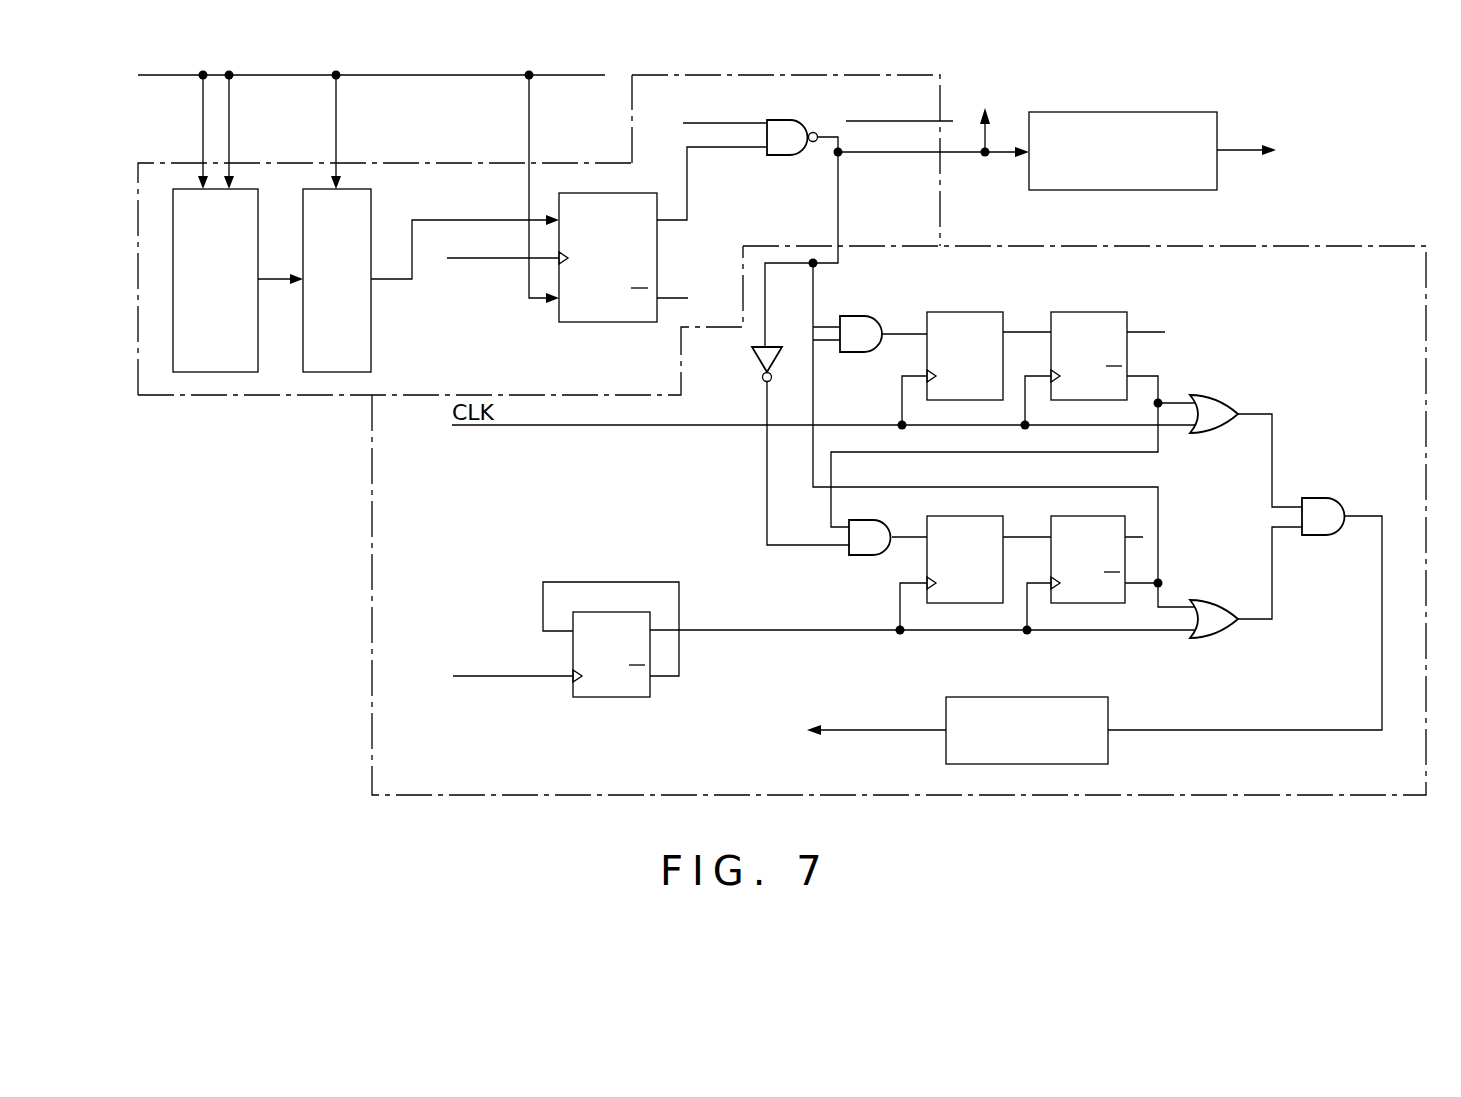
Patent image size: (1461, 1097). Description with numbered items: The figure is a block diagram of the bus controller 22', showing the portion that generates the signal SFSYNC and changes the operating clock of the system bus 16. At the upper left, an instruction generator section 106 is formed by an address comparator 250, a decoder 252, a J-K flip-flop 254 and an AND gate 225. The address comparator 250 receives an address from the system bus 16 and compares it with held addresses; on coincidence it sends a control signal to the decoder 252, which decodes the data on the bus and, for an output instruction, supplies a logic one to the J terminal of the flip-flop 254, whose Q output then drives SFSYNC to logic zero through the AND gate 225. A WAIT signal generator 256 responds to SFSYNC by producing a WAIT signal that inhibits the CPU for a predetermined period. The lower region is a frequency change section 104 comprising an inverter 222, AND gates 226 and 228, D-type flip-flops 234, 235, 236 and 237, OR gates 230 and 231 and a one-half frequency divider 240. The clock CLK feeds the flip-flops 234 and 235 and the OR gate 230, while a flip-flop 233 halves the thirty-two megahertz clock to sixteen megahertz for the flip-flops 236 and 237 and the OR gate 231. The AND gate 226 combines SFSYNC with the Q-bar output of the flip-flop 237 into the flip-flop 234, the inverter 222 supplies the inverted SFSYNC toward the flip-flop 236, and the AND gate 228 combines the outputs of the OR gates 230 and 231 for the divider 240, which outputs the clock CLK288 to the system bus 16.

The system bus 16 is at (350, 74).
The bus controller 22' is at (235, 591).
The frequency change section 104 is at (371, 733).
The instruction generator section 106 is at (310, 395).
The inverter 222 is at (750, 356).
The AND gate 225 is at (793, 120).
The AND gate 226 is at (860, 316).
The AND gate 228 is at (1316, 498).
The OR gate 230 is at (1215, 397).
The OR gate 231 is at (1208, 600).
The D-type flip-flop 233 is at (615, 697).
The D-type flip-flop 234 is at (962, 312).
The D-type flip-flop 235 is at (1086, 312).
The D-type flip-flop 236 is at (963, 501).
The D-type flip-flop 237 is at (1081, 501).
The ½ frequency divider 240 is at (1108, 708).
The address comparator 250 is at (208, 372).
The decoder 252 is at (371, 358).
The J-K flip-flop 254 is at (600, 322).
The WAIT signal generator 256 is at (1131, 112).